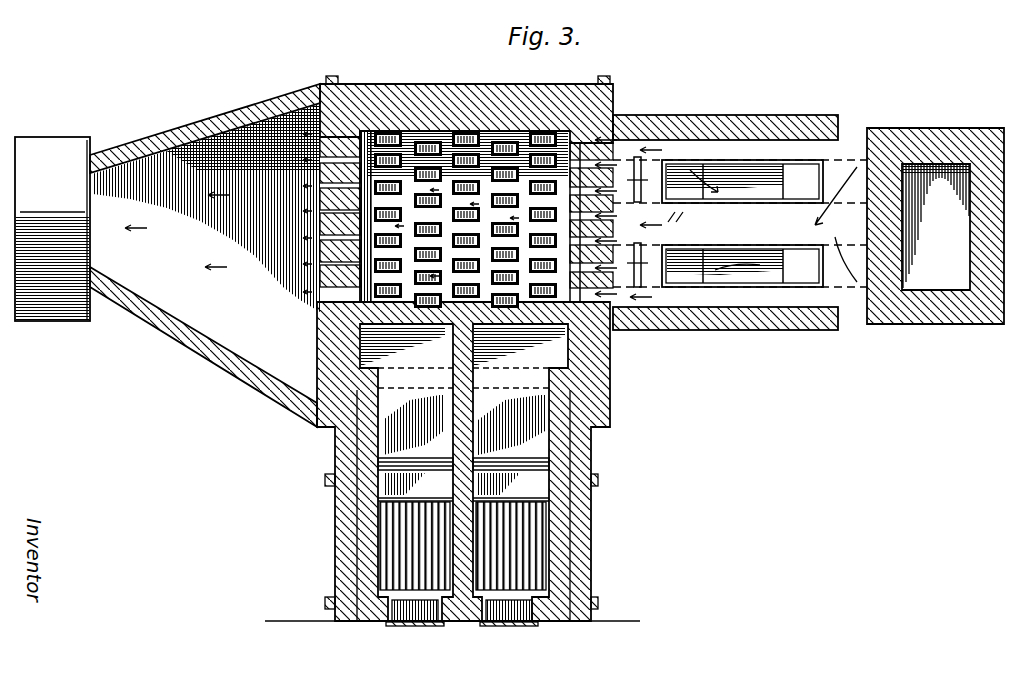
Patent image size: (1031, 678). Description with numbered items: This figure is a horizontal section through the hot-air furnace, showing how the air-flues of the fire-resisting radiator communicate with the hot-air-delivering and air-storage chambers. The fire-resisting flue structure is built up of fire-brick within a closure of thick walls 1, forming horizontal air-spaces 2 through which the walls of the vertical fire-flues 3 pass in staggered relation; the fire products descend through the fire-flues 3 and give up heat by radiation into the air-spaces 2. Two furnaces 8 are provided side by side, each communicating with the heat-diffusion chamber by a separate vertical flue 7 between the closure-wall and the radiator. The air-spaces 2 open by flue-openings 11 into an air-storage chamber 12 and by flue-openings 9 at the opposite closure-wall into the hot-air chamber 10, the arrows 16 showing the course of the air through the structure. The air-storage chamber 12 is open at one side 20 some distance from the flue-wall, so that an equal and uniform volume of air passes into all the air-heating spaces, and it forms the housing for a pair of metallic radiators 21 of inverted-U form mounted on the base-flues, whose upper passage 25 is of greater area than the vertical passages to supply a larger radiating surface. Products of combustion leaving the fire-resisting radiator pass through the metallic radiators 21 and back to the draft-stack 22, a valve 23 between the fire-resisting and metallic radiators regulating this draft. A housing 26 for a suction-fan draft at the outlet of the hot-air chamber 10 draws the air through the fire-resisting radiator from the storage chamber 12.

The closure walls 1 is at (459, 84).
The horizontal air-spaces 2 is at (398, 126).
The vertical fire-flues 3 is at (386, 128).
The vertical flue 7 is at (463, 410).
The furnace 8 is at (340, 545).
The flue-openings 9 is at (340, 128).
The hot-air chamber 10 is at (206, 208).
The flue-openings 11 is at (653, 212).
The air-storage chamber 12 is at (740, 223).
The arrows 16 is at (834, 156).
The open side 20 is at (866, 130).
The metallic radiators 21 is at (679, 203).
The draft-stack 22 is at (936, 226).
The valve 23 is at (643, 170).
The upper passage 25 is at (798, 180).
The housing 26 is at (167, 255).